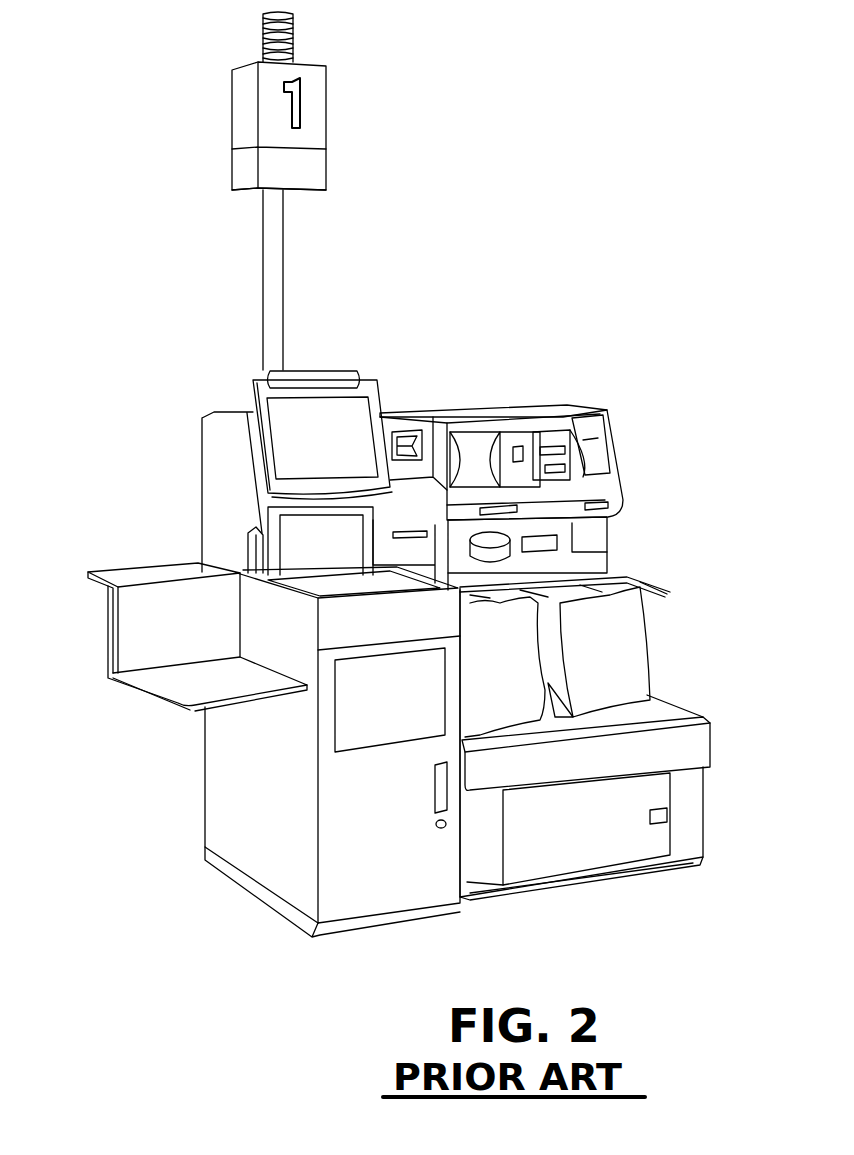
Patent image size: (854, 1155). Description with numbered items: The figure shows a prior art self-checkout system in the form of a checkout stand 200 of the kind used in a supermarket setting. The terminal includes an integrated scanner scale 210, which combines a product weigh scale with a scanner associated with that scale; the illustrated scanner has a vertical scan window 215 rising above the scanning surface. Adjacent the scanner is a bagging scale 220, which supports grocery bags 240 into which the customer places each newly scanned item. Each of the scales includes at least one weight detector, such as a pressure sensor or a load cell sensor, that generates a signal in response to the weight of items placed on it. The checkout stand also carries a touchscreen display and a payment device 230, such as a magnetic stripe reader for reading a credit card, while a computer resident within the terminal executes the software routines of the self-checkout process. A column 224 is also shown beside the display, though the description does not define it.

The checkout stand 200 is at (614, 170).
The integrated scanner scale 210 is at (338, 583).
The vertical scan window 215 is at (313, 532).
The bagging scale 220 is at (333, 418).
The column 224 is at (213, 463).
The payment device 230 is at (403, 440).
The grocery bags 240 is at (520, 675).